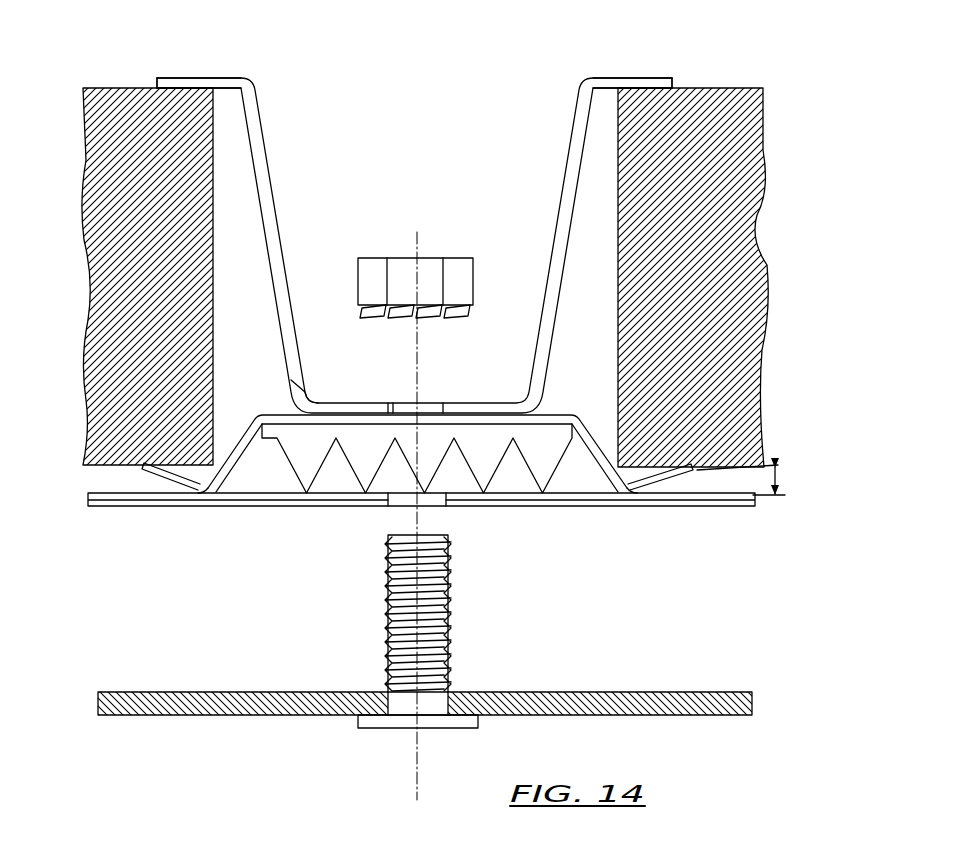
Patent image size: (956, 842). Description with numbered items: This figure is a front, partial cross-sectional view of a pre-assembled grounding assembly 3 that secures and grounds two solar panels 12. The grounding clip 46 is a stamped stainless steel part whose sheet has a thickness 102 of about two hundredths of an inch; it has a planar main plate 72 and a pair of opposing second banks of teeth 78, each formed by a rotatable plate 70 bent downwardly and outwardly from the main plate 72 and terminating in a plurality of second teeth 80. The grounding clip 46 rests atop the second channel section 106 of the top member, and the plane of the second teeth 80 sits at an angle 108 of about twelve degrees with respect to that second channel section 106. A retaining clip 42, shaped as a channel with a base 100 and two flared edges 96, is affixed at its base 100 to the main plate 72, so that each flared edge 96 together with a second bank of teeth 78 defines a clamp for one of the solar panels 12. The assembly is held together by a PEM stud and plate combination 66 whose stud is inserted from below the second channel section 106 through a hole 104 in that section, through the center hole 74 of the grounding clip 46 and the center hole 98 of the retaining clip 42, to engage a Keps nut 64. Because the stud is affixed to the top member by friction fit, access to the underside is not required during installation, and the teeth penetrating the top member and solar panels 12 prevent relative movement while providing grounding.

The grounding assembly 3 is at (363, 205).
The solar panel 12 is at (214, 291).
The retaining clip 42 is at (267, 156).
The grounding clip 46 is at (290, 398).
The Keps nut 64 is at (438, 258).
The PEM stud and plate combination 66 is at (389, 629).
The rotatable plate 70 is at (217, 492).
The main plate 72 is at (534, 411).
The center hole 74 is at (388, 404).
The second bank of teeth 78 is at (263, 463).
The second teeth 80 is at (170, 497).
The flared edge 96 is at (199, 78).
The center hole 98 is at (420, 404).
The base 100 is at (455, 404).
The thickness 102 is at (214, 438).
The hole 104 is at (444, 506).
The second channel section 106 is at (700, 506).
The angle 108 is at (780, 482).